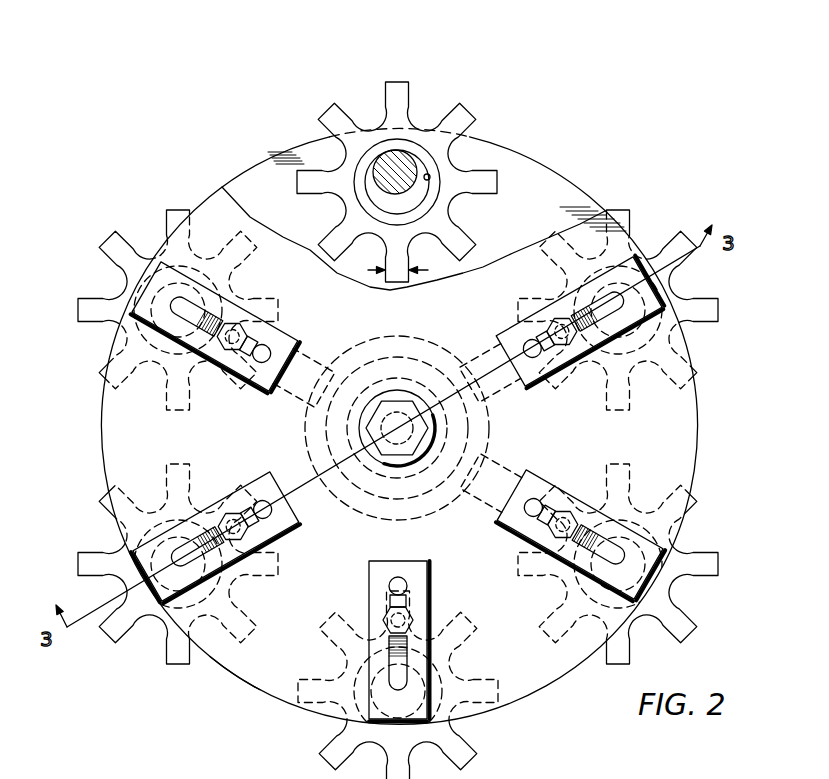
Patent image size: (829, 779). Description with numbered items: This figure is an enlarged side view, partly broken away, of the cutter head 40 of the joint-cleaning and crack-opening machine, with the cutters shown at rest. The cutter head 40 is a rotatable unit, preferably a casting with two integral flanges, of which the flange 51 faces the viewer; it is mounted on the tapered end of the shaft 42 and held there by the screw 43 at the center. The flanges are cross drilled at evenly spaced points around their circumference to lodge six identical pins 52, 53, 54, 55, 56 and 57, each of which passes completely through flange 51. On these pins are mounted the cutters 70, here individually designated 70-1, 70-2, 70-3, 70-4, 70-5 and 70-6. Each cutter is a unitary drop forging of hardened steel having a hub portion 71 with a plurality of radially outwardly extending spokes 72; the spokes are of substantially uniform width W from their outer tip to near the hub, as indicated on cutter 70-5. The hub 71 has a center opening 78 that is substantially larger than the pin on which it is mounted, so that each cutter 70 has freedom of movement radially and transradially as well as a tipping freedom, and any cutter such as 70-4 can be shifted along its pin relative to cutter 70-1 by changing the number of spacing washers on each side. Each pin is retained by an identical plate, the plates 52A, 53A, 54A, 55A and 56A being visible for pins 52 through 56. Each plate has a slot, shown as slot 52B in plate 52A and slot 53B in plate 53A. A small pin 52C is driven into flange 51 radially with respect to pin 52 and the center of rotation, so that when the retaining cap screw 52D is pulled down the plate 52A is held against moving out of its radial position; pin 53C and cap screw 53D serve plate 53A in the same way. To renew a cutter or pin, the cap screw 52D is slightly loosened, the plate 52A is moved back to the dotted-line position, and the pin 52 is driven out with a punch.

The cutter head 40 is at (91, 440).
The shaft 42 is at (381, 356).
The screw 43 is at (392, 402).
The flange 51 is at (247, 659).
The pin 52 is at (235, 318).
The plate 52A is at (284, 333).
The slot 52B is at (218, 317).
The pin 52C is at (268, 347).
The retaining cap screw 52D is at (239, 331).
The pin 53 is at (211, 526).
The plate 53A is at (297, 528).
The slot 53B is at (183, 549).
The pin 53C is at (263, 503).
The retaining cap screw 53D is at (230, 512).
The pin 54 is at (399, 640).
The plate 54A is at (397, 562).
The pin 55 is at (580, 523).
The plate 55A is at (554, 483).
The pin 56 is at (581, 334).
The plate 56A is at (500, 338).
The pin 57 is at (404, 160).
The cutter 70 is at (387, 164).
The cutter 70-1 is at (114, 654).
The cutter 70-2 is at (489, 752).
The cutter 70-3 is at (725, 560).
The cutter 70-4 is at (688, 217).
The cutter 70-5 is at (397, 164).
The cutter 70-6 is at (174, 203).
The hub portion 71 is at (378, 146).
The spokes 72 is at (397, 80).
The center opening 78 is at (431, 176).